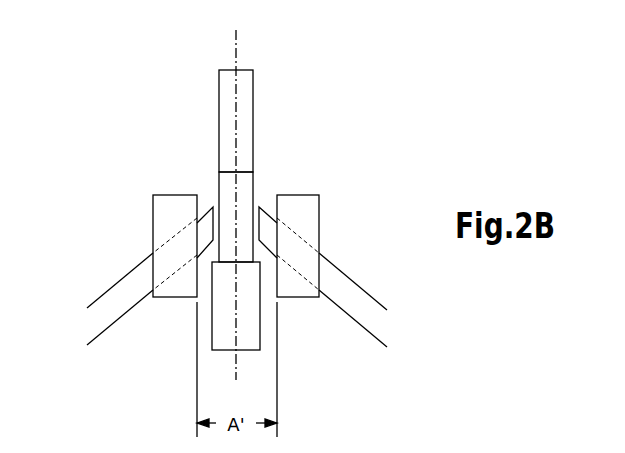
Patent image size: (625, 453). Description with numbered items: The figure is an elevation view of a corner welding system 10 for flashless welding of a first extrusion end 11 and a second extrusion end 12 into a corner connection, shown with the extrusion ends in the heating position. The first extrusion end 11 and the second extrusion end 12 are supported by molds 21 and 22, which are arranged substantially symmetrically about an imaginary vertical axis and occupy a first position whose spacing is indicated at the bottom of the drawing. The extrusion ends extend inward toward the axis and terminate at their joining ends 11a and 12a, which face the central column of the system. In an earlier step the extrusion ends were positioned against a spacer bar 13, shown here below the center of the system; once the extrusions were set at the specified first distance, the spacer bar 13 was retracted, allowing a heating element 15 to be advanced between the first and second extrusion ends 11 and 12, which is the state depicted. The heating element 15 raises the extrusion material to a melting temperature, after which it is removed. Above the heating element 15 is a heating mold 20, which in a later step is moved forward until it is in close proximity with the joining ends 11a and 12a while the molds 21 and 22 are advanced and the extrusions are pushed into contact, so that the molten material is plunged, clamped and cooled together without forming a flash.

The optical device assembly 10 is at (134, 100).
The first extrusion end 11 is at (343, 288).
The joining end of the first extrusion 11a is at (259, 207).
The second extrusion end 12 is at (120, 295).
The joining end of the second extrusion 12a is at (213, 207).
The spacer bar 13 is at (255, 318).
The heating element 15 is at (247, 190).
The heating mold 20 is at (236, 70).
The mold 21 is at (307, 212).
The mold 22 is at (168, 210).